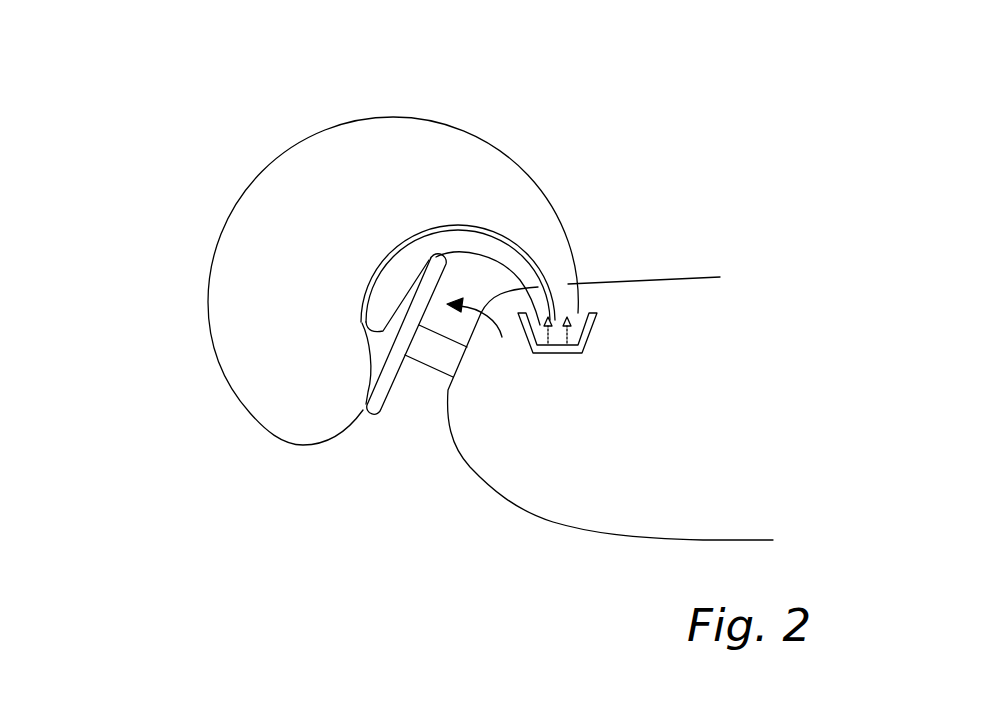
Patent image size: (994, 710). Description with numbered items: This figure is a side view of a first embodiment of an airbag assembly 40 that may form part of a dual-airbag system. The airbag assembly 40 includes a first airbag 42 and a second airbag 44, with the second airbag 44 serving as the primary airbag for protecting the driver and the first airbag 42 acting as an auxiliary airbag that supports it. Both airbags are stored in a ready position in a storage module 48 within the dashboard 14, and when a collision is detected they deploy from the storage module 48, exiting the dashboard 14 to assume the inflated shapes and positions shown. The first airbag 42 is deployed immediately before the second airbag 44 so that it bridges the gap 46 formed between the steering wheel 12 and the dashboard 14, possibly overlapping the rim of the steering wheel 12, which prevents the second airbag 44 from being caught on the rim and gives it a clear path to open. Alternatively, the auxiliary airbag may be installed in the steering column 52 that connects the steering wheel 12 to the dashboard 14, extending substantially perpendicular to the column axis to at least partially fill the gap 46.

The airbag assembly 40 is at (213, 196).
The second airbag 44 is at (322, 145).
The first airbag 42 is at (480, 243).
The steering wheel 12 is at (370, 420).
The steering column 52 is at (445, 357).
The dashboard 14 is at (683, 279).
The gap 46 is at (480, 337).
The storage module 48 is at (592, 333).